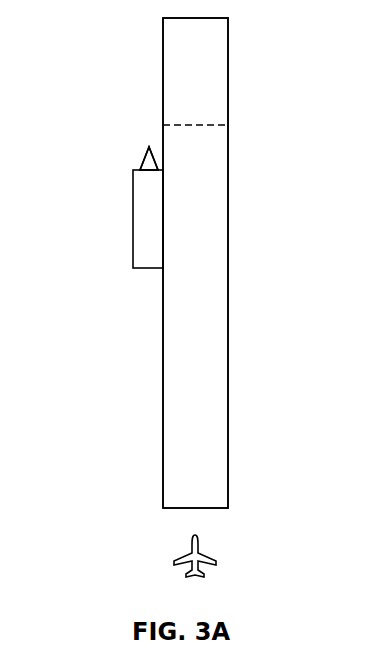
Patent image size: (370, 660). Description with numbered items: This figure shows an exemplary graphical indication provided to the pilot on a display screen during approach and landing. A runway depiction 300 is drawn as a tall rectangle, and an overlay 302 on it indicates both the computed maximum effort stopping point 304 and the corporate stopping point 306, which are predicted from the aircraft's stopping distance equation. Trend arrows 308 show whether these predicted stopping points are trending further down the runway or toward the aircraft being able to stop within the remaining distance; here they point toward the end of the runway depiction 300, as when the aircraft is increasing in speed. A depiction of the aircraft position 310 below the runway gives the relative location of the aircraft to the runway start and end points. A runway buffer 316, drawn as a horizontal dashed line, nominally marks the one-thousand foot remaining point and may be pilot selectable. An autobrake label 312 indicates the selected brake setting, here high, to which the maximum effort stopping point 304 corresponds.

The runway depiction 300 is at (228, 416).
The overlay 302 is at (262, 187).
The maximum effort stopping point 304 is at (148, 270).
The corporate stopping point 306 is at (137, 168).
The trend arrows 308 is at (88, 106).
The aircraft position 310 is at (178, 562).
The autobrake label 312 is at (100, 270).
The runway buffer 316 is at (228, 85).